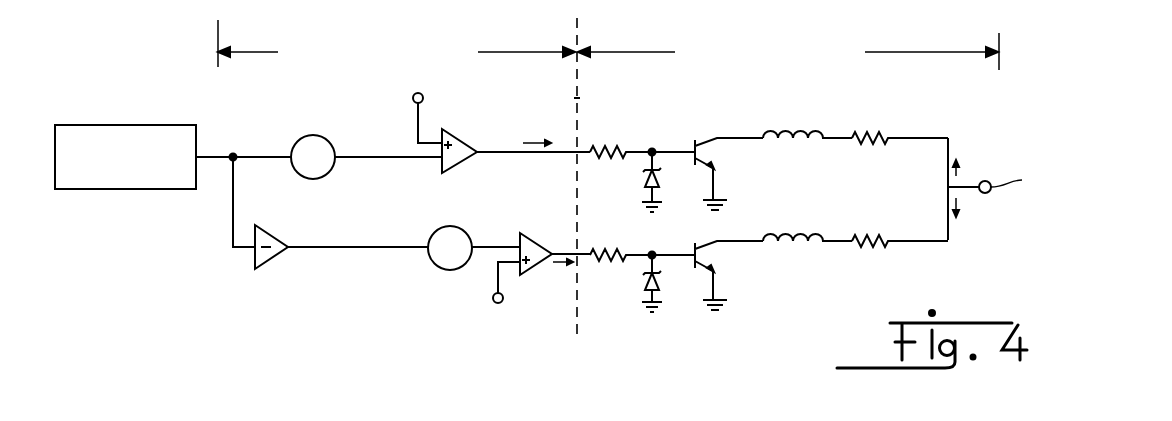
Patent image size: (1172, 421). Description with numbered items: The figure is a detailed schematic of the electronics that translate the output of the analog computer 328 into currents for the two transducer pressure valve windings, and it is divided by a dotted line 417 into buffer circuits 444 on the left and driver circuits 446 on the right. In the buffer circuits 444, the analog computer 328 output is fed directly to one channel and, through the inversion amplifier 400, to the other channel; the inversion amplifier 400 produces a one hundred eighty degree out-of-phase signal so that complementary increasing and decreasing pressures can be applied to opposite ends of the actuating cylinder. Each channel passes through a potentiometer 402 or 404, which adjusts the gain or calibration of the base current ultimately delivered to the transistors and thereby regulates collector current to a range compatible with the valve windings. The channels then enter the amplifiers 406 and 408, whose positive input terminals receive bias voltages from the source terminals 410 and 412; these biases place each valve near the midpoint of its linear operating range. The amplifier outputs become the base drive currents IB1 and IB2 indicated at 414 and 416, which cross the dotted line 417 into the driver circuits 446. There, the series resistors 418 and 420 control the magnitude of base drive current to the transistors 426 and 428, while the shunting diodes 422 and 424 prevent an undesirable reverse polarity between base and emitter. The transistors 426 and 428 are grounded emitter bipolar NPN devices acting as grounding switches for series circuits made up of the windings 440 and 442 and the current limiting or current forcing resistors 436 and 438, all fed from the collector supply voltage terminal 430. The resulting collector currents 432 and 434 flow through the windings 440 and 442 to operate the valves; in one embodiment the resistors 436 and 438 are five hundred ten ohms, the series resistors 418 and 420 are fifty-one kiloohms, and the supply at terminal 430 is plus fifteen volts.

The analog computer 328 is at (127, 190).
The inversion amplifier 400 is at (268, 228).
The potentiometer 402 is at (333, 170).
The potentiometer 404 is at (432, 265).
The amplifier 406 is at (476, 153).
The amplifier 408 is at (520, 233).
The source terminal 410 is at (413, 98).
The source terminal 412 is at (490, 299).
The base drive current IB1 414 is at (560, 100).
The base drive current IB2 416 is at (555, 293).
The dotted line 417 is at (577, 98).
The series resistor 418 is at (595, 150).
The series resistor 420 is at (595, 253).
The shunting diode 422 is at (640, 167).
The shunting diode 424 is at (640, 283).
The transistor 426 is at (712, 160).
The transistor 428 is at (712, 265).
The collector supply voltage terminal 430 is at (1062, 178).
The collector current 432 is at (1000, 155).
The collector current 434 is at (1003, 210).
The current limiting resistor 436 is at (868, 135).
The current limiting resistor 438 is at (865, 245).
The transducer pressure valve winding 440 is at (798, 107).
The transducer pressure valve winding 442 is at (798, 208).
The buffer circuits 444 is at (393, 31).
The driver circuits 446 is at (823, 31).